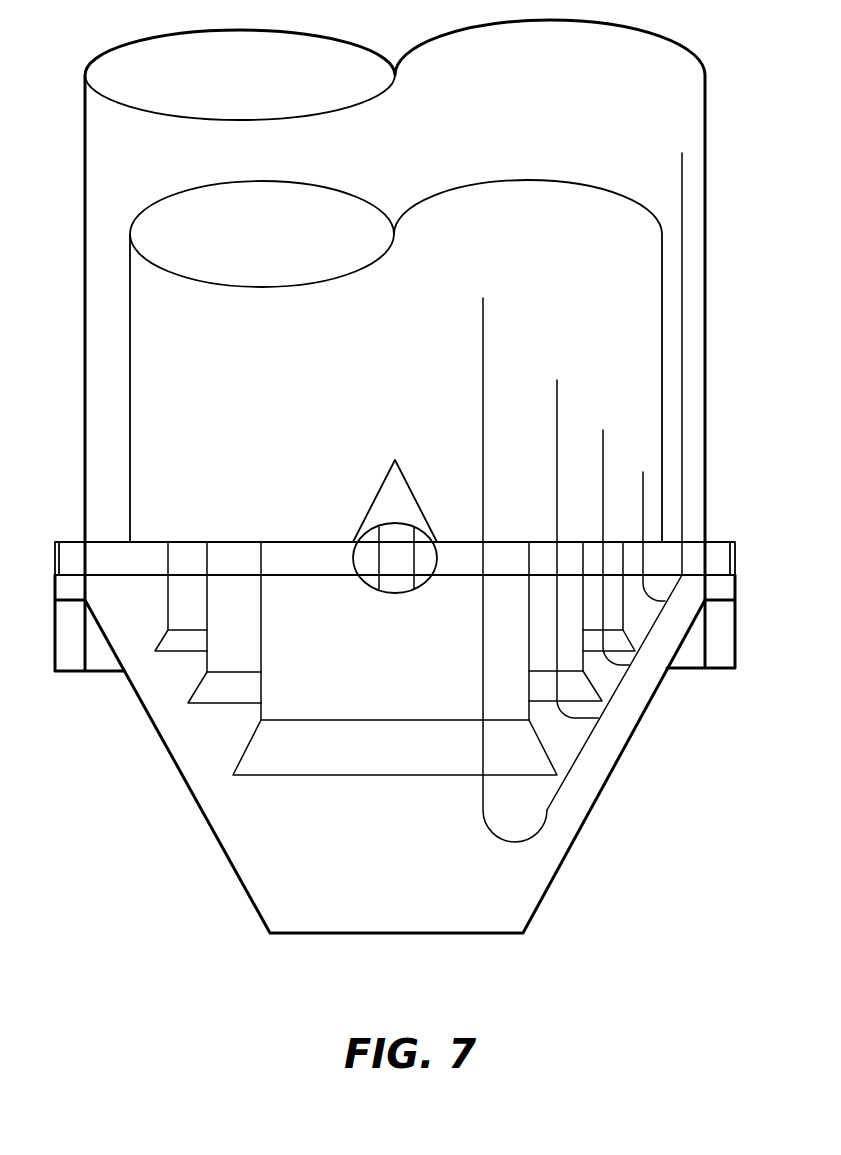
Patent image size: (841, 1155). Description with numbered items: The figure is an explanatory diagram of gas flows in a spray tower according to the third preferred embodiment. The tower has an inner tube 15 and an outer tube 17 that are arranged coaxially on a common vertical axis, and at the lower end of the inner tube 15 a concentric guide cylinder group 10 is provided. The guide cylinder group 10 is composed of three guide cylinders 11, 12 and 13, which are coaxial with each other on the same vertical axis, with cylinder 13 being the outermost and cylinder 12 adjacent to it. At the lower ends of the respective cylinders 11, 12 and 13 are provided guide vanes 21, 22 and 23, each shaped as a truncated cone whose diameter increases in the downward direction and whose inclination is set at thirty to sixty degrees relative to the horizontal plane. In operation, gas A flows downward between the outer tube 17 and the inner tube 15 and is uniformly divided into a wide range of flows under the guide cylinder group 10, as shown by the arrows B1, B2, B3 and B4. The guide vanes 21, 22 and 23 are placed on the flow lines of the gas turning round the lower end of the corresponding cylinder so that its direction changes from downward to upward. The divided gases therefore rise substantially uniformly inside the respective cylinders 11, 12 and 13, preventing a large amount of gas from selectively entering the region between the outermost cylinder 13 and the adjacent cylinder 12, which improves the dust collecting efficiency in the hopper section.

The outer tube 17 is at (143, 43).
The inner tube 15 is at (162, 207).
The guide cylinder group 10 is at (340, 507).
The guide cylinder 13 is at (180, 588).
The guide cylinder 12 is at (228, 588).
The guide cylinder 11 is at (297, 588).
The guide vane 21 is at (370, 776).
The guide vane 22 is at (207, 703).
The guide vane 23 is at (168, 653).
The gas A is at (618, 468).
The arrow (divided gas flow) B1 is at (643, 470).
The arrow (divided gas flow) B2 is at (603, 428).
The arrow (divided gas flow) B3 is at (557, 378).
The arrow (divided gas flow) B4 is at (483, 296).